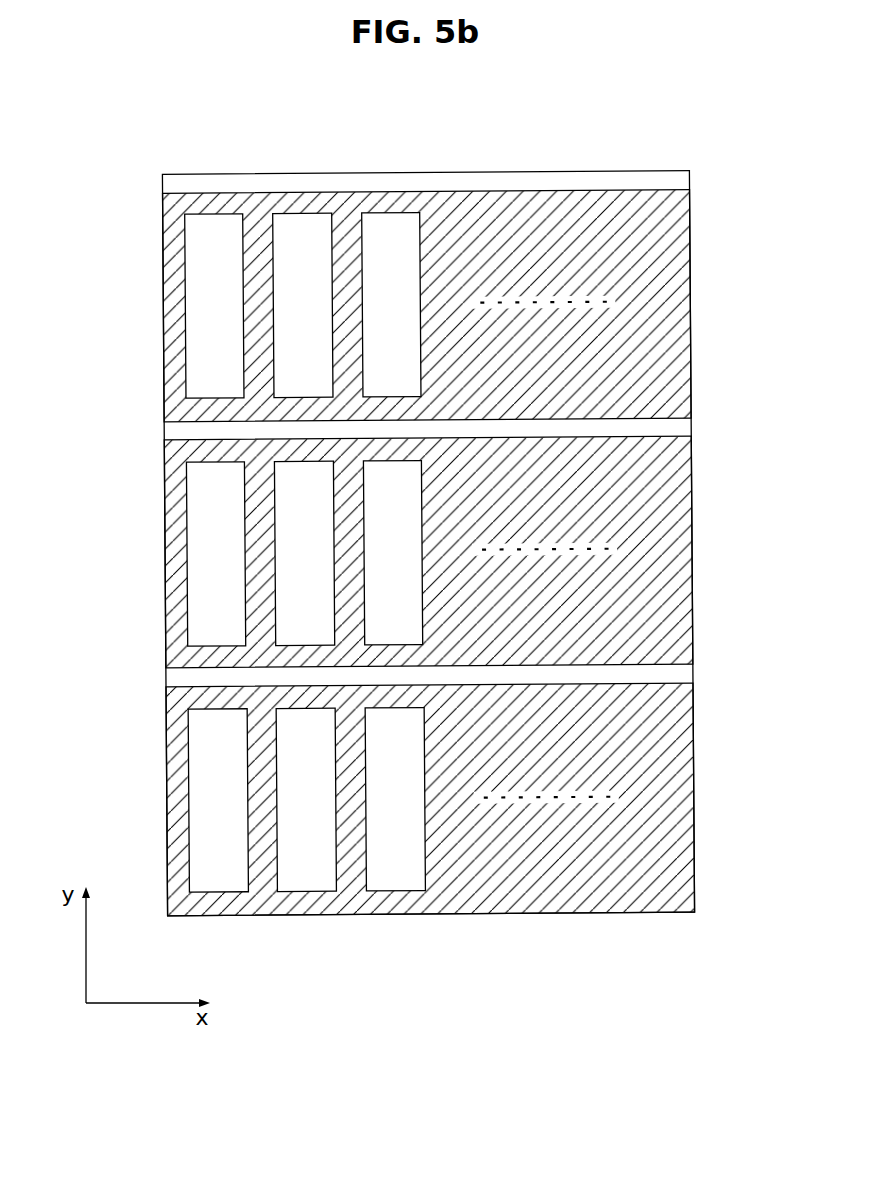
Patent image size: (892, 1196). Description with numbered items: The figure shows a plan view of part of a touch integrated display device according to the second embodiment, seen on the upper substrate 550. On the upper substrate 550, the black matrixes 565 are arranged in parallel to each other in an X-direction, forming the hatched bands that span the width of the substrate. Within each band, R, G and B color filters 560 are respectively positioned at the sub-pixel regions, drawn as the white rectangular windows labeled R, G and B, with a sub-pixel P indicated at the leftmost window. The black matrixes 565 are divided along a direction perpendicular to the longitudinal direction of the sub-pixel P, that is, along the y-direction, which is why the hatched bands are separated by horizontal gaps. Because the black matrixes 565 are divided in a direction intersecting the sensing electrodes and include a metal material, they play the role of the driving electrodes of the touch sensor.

The upper substrate 550 is at (585, 180).
The color filters 560 is at (390, 233).
The black matrixes 565 is at (680, 343).
The sub-pixel P is at (193, 319).